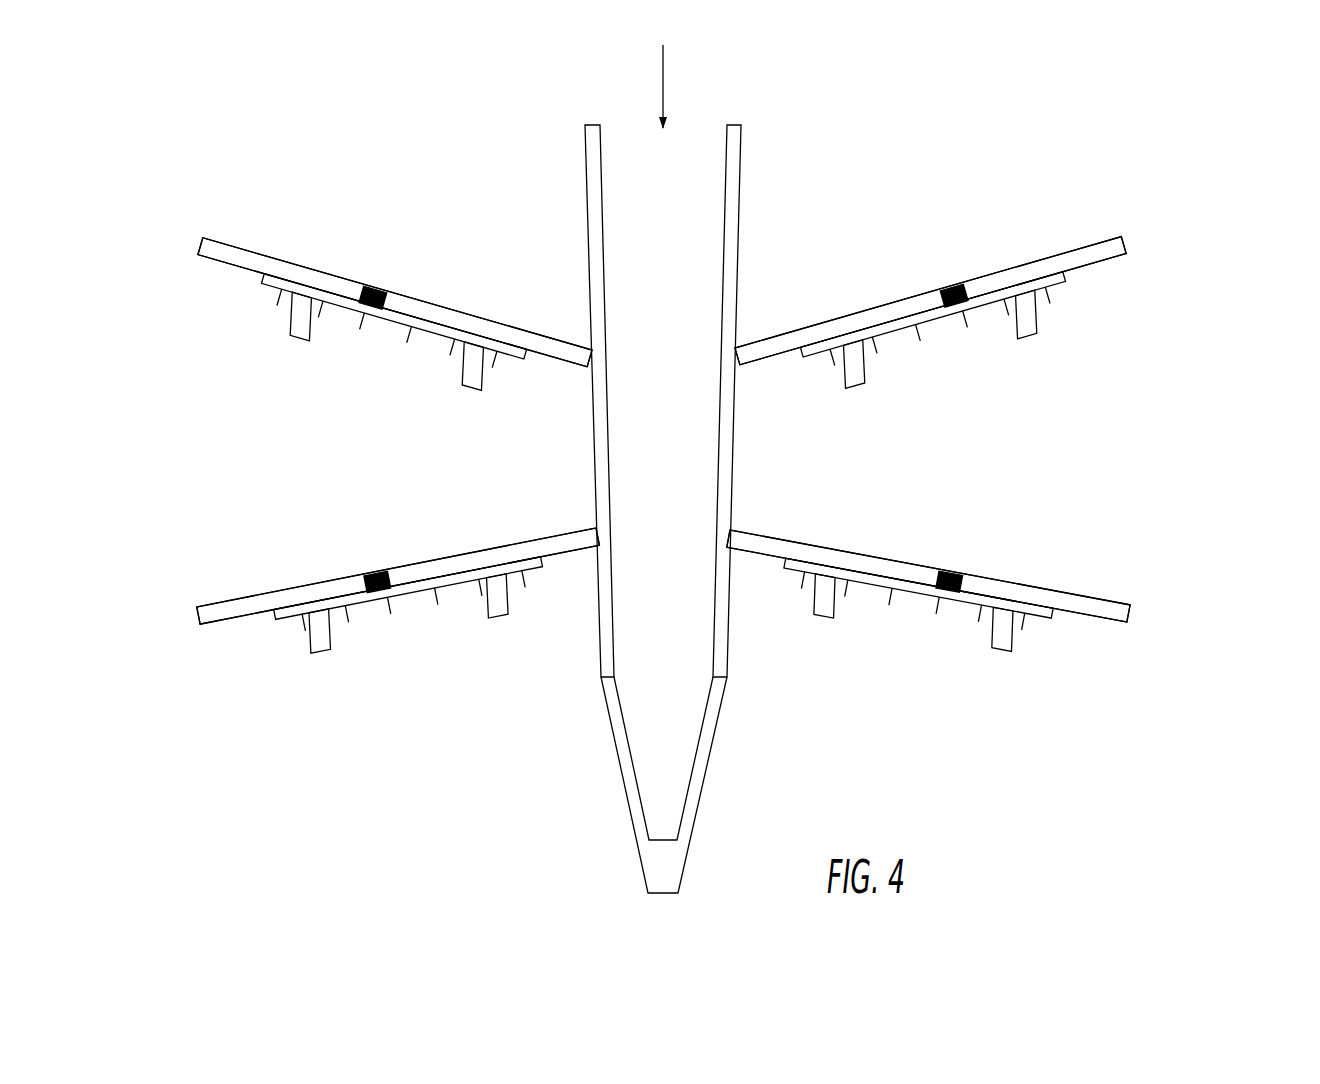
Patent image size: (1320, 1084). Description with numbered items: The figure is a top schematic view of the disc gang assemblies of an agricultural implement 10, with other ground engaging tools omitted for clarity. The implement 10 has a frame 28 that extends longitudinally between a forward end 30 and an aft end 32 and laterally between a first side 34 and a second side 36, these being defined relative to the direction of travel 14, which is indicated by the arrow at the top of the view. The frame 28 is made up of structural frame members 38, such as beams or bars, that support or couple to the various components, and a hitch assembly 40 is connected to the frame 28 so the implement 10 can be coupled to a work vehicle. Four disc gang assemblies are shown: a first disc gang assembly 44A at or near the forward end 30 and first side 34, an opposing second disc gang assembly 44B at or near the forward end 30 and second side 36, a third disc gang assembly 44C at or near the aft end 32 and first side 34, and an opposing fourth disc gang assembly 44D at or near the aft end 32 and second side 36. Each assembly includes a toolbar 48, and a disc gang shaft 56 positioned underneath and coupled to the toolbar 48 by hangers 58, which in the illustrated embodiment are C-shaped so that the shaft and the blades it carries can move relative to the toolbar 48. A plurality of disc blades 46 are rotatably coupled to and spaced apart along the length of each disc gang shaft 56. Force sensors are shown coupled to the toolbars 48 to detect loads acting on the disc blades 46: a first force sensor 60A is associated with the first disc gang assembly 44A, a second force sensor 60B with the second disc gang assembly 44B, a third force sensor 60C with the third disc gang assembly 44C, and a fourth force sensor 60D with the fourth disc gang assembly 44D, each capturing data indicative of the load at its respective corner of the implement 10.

The implement 10 is at (308, 132).
The direction of travel 14 is at (664, 98).
The frame 28 is at (574, 783).
The forward end 30 is at (619, 913).
The aft end 32 is at (526, 110).
The first side 34 is at (1224, 507).
The second side 36 is at (196, 518).
The structural frame members 38 is at (712, 663).
The hitch assembly 40 is at (673, 868).
The first disc gang assembly 44A is at (960, 656).
The second disc gang assembly 44B is at (365, 654).
The third disc gang assembly 44C is at (990, 358).
The fourth disc gang assembly 44D is at (337, 351).
The disc blades 46 is at (371, 333).
The toolbar 48 is at (287, 261).
The disc gang shaft 56 is at (517, 361).
The hangers 58 is at (297, 317).
The first force sensor 60A is at (952, 573).
The second force sensor 60B is at (372, 575).
The third force sensor 60C is at (948, 289).
The fourth force sensor 60D is at (382, 289).